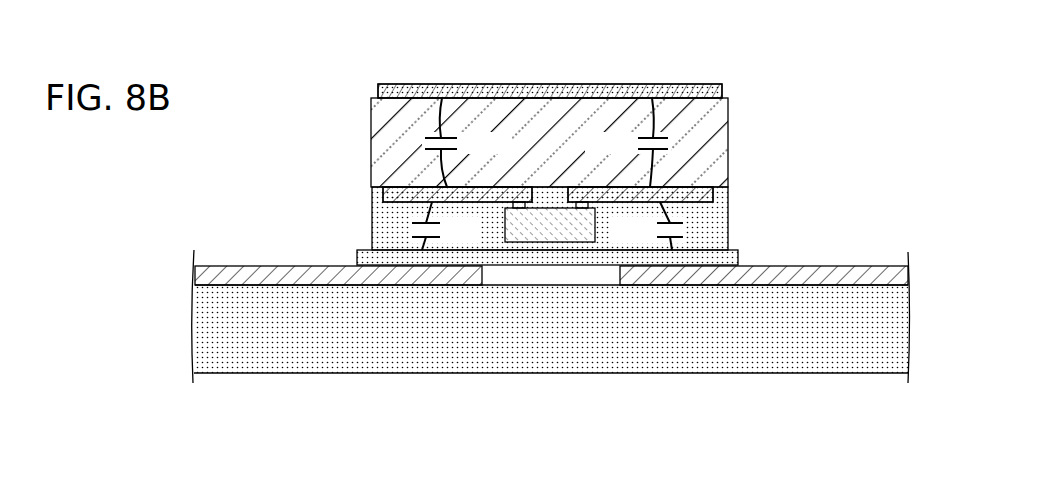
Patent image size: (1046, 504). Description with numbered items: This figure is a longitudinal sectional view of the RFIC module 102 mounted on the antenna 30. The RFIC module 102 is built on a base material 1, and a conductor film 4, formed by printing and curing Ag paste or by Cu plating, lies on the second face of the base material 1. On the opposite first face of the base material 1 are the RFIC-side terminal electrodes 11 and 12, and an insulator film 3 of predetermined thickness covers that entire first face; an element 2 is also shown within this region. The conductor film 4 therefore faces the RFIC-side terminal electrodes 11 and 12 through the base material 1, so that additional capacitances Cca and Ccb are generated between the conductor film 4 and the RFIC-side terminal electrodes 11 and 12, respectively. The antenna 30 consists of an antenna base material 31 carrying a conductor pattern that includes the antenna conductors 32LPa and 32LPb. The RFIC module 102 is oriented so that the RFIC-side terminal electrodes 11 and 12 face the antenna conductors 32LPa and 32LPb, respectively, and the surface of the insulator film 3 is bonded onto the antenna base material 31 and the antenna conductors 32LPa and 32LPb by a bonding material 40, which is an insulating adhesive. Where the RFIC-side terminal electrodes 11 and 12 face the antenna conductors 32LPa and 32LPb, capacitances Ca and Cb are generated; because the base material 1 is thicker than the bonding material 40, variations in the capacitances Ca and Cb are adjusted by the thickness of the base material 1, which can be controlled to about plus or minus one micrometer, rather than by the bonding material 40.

The RFIC module 102 is at (577, 214).
The base material 1 is at (722, 128).
The conductor film 4 is at (550, 97).
The RFIC-side terminal electrode 11 is at (410, 187).
The RFIC-side terminal electrode 12 is at (697, 186).
The insulator film 3 is at (720, 218).
The functional element 2 is at (550, 225).
The bonding material 40 is at (740, 256).
The antenna 30 is at (555, 333).
The antenna base material 31 is at (502, 362).
The antenna conductor 32LPa is at (272, 265).
The antenna conductor 32LPb is at (827, 270).
The additional capacitance Cca is at (467, 142).
The additional capacitance Ccb is at (628, 142).
The capacitance Ca is at (445, 226).
The capacitance Cb is at (648, 226).